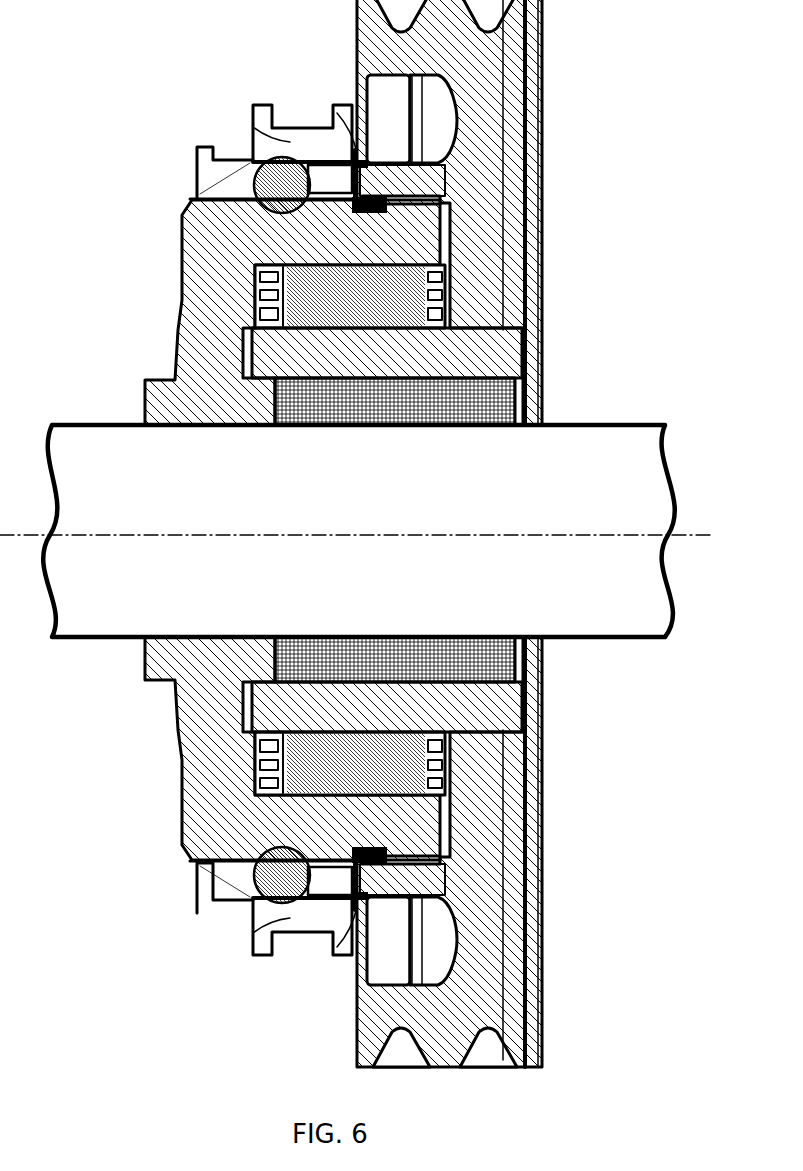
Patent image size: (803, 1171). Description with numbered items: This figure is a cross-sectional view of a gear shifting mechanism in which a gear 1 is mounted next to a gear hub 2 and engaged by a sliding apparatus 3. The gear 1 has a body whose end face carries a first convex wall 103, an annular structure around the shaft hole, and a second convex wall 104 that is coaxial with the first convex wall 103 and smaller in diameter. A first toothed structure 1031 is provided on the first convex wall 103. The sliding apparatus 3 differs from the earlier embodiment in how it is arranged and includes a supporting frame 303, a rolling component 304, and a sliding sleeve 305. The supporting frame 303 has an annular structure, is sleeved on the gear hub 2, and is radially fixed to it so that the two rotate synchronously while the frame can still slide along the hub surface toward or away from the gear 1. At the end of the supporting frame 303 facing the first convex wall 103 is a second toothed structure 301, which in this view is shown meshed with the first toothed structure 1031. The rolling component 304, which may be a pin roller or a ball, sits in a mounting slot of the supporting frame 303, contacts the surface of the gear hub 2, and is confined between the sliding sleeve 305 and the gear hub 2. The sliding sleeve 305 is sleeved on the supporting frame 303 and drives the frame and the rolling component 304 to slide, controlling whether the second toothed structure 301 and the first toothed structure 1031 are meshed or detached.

The gear 1 is at (485, 213).
The gear hub 2 is at (227, 258).
The sliding apparatus 3 is at (218, 486).
The first convex wall 103 is at (404, 175).
The second convex wall 104 is at (362, 358).
The second toothed structure 301 is at (343, 173).
The first toothed structure 1031 is at (343, 173).
The supporting frame 303 is at (265, 172).
The rolling component 304 is at (287, 177).
The sliding sleeve 305 is at (290, 148).